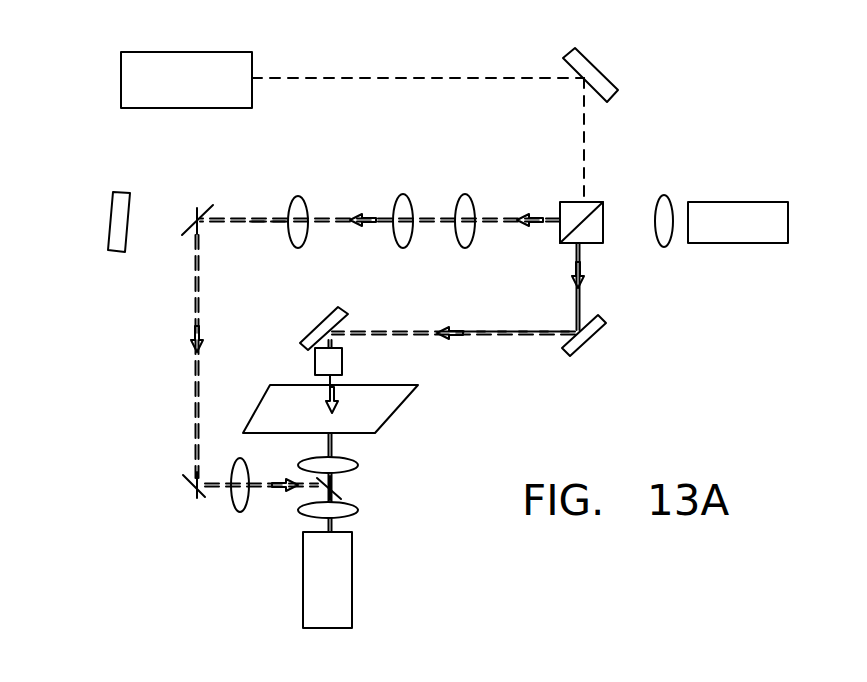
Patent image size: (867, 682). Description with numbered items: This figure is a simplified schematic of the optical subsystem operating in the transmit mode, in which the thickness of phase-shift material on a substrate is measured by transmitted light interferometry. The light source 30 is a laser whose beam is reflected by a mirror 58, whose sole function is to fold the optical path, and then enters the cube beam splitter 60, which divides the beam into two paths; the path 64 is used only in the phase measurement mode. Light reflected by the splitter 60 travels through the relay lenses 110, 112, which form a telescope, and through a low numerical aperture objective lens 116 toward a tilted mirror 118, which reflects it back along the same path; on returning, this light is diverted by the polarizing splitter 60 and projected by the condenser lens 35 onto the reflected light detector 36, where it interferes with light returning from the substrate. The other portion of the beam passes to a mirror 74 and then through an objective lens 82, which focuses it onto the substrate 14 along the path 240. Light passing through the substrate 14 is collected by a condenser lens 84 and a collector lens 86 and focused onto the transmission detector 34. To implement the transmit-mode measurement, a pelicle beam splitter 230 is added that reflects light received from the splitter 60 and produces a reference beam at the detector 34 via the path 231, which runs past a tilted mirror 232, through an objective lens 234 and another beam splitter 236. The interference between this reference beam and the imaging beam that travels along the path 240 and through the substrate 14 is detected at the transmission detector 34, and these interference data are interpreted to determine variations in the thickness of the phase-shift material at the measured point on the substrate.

The light source 30 is at (174, 52).
The mirror 58 is at (597, 62).
The cube beam splitter 60 is at (595, 202).
The condenser lens 35 is at (664, 247).
The reflected light detector 36 is at (740, 243).
The path 64 is at (583, 356).
The path 240 is at (530, 298).
The mirror 74 is at (312, 325).
The objective lens 82 is at (342, 358).
The substrate 14 is at (393, 417).
The condenser lens 84 is at (358, 465).
The beam splitter 236 is at (340, 495).
The collector lens 86 is at (355, 512).
The transmission detector 34 is at (303, 545).
The objective lens 234 is at (232, 508).
The tilted mirror 232 is at (190, 485).
The pelicle beam splitter 230 is at (198, 219).
The tilted mirror 118 is at (106, 248).
The low numerical aperture objective lens 116 is at (298, 196).
The relay lens 112 is at (403, 194).
The relay lens 110 is at (470, 198).
The path 231 is at (320, 225).